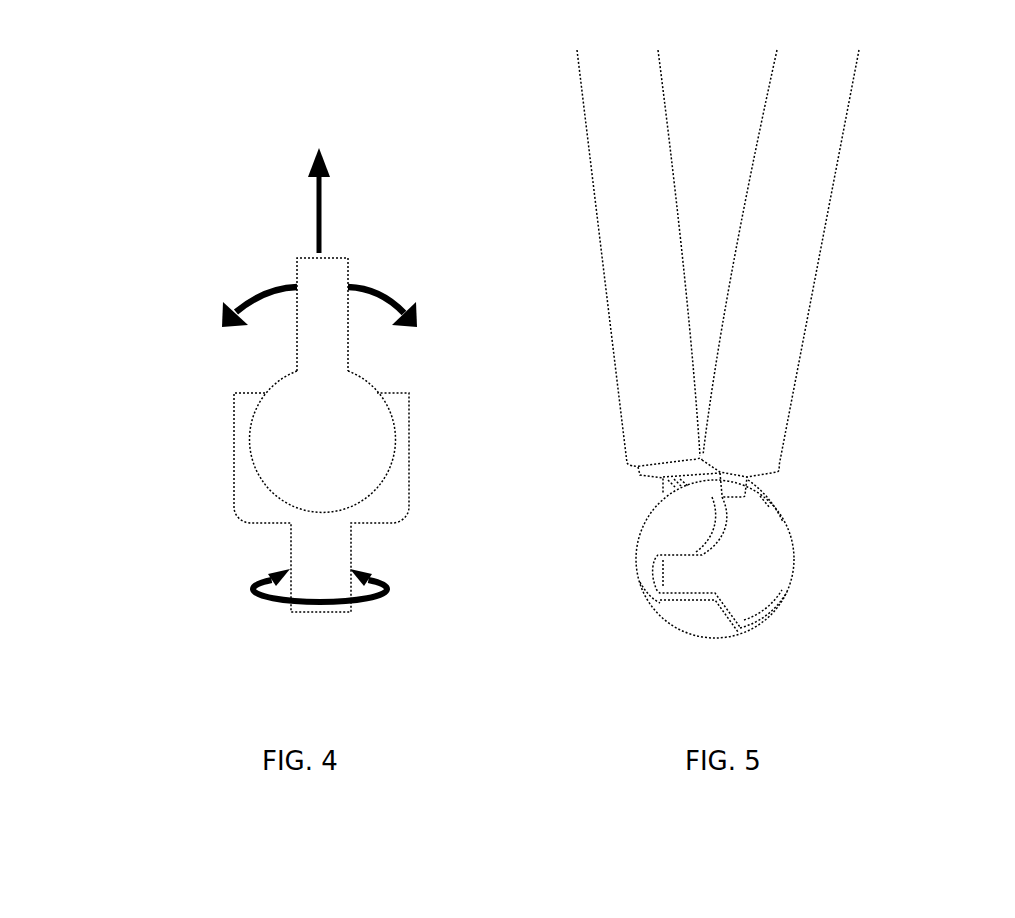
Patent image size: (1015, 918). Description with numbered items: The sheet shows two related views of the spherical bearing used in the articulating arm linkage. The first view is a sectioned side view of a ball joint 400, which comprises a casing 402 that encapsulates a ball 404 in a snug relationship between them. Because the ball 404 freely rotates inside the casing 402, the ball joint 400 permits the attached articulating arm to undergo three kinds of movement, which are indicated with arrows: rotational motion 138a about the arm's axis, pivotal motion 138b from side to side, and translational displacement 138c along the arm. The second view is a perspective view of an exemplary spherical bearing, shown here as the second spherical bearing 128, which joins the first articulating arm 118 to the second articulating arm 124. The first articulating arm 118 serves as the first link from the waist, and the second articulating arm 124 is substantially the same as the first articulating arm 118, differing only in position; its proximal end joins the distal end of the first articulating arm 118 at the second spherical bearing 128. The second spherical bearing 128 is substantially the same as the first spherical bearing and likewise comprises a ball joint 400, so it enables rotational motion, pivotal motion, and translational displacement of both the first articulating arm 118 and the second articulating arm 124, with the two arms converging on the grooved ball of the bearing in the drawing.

In FIG. 4, the ball joint 400 is at (152, 311).
In FIG. 4, the casing 402 is at (408, 450).
In FIG. 4, the ball 404 is at (367, 423).
In FIG. 4, the rotational motion 138a is at (258, 593).
In FIG. 4, the pivotal motion 138b is at (278, 284).
In FIG. 4, the translational displacement 138c is at (328, 212).
In FIG. 5, the second articulating arm 124 is at (605, 268).
In FIG. 5, the first articulating arm 118 is at (808, 264).
In FIG. 5, the second spherical bearing 128 is at (845, 570).